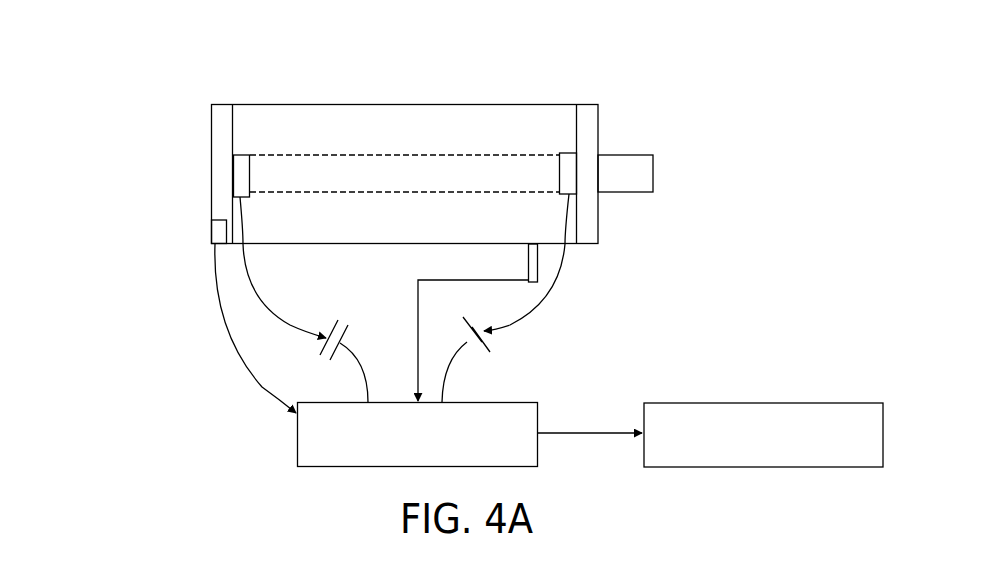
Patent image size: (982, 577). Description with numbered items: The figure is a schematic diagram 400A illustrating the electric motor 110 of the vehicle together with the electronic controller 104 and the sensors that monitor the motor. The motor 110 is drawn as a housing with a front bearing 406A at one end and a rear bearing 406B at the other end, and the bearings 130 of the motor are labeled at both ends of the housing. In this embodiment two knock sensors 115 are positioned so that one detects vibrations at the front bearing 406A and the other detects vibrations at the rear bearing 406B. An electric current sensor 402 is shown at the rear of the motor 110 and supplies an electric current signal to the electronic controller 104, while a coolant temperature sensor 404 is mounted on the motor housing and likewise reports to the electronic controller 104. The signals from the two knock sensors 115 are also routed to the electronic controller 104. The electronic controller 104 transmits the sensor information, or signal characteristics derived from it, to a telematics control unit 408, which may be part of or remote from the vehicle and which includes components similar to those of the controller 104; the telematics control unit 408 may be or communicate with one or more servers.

The schematic diagram 400A is at (163, 58).
The electric motor 110 is at (405, 103).
The rear bearing 406B is at (214, 137).
The front bearing 406A is at (588, 106).
The knock sensor 115 is at (247, 154).
The bearings 130 is at (211, 193).
The electric current sensor 402 is at (218, 231).
The coolant temperature sensor 404 is at (538, 266).
The electronic controller 104 is at (297, 448).
The telematics control unit 408 is at (763, 403).